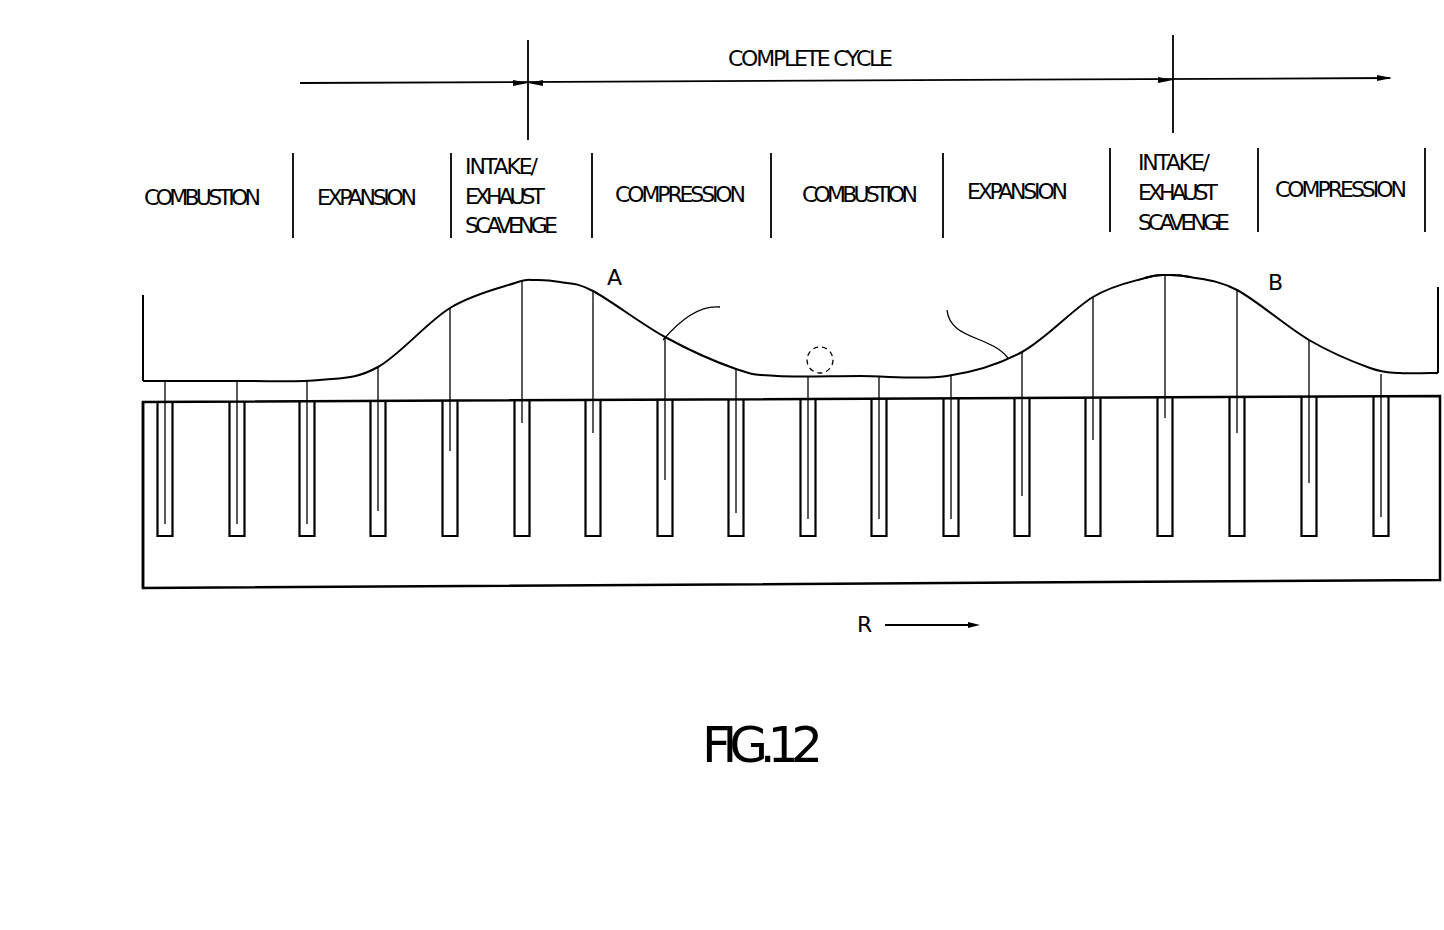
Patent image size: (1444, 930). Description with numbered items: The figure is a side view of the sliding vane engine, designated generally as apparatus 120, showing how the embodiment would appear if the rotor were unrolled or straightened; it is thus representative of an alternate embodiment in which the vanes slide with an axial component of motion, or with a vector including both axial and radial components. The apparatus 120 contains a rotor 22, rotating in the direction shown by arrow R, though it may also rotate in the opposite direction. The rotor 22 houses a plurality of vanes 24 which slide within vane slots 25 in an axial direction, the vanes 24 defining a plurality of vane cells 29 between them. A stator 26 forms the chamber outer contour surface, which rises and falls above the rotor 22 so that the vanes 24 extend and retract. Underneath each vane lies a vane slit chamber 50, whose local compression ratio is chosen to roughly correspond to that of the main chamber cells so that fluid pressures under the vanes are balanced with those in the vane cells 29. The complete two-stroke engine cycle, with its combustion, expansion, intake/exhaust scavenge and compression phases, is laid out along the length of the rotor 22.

The sliding vane engine apparatus 120 is at (143, 440).
The rotor 22 is at (1097, 562).
The vanes 24 is at (450, 347).
The vane slots 25 is at (455, 537).
The stator 26 is at (782, 372).
The vane cells 29 is at (1205, 297).
The vane slit chamber 50 is at (835, 356).